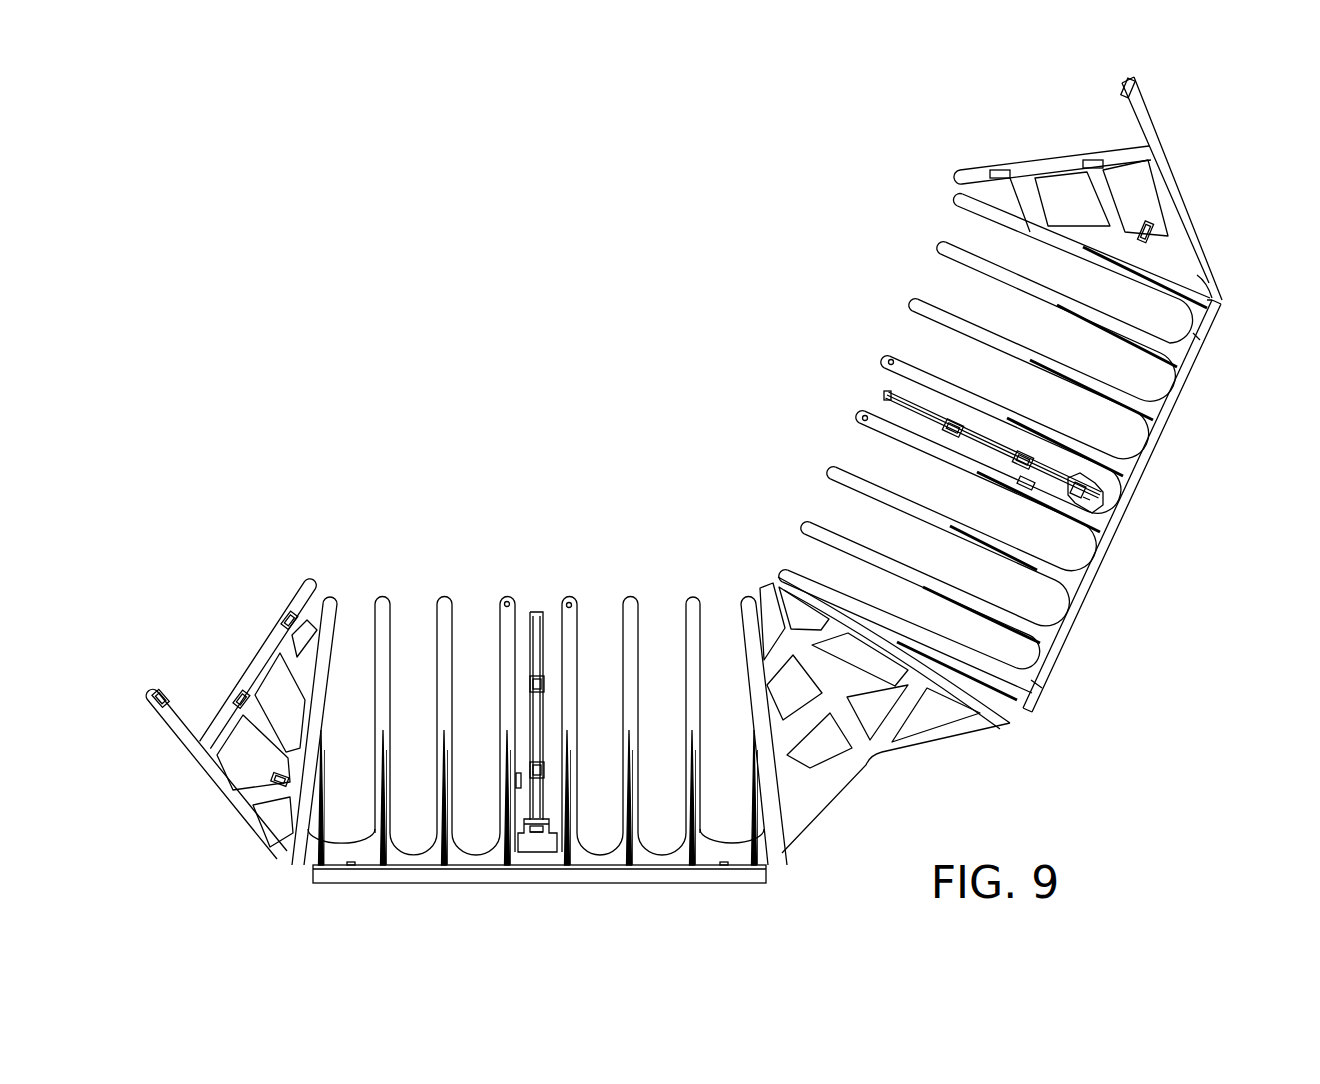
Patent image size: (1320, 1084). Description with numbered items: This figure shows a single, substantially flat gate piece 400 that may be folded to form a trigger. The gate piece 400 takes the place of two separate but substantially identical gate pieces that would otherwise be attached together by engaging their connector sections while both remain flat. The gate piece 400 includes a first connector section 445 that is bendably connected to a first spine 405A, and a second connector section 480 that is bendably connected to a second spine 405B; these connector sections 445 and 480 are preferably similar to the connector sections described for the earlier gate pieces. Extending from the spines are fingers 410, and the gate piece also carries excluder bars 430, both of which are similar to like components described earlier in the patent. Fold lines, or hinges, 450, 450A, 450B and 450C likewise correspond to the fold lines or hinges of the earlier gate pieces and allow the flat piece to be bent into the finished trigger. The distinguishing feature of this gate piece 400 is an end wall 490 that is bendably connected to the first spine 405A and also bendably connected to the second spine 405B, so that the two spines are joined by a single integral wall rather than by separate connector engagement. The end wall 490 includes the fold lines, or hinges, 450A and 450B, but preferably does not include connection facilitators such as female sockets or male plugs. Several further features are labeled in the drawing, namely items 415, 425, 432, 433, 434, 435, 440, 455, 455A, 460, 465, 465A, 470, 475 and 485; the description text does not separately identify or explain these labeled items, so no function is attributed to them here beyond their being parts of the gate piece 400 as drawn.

The gate piece 400 is at (566, 270).
The first spine 405A is at (398, 882).
The second spine 405B is at (1058, 637).
The fingers 410 is at (337, 598).
The pins 415 is at (507, 867).
The tabs 425 is at (350, 869).
The excluder bars 430 is at (537, 610).
The latch 432 is at (545, 829).
The latch opening 433 is at (532, 836).
The latch housing 434 is at (549, 822).
The clips 435 is at (530, 683).
The retainer 440 is at (516, 780).
The first connector section 445 is at (250, 640).
The fold line or hinge 450 is at (303, 830).
The fold line or hinge 450A is at (762, 677).
The fold line or hinge 450B is at (1000, 723).
The fold line or hinge 450C is at (1208, 278).
The lower arm 455 is at (246, 809).
The top bar 455A is at (1175, 204).
The upper arm 460 is at (258, 665).
The cross strut 465 is at (268, 733).
The side arm 465A is at (1117, 203).
The strut opening 470 is at (298, 653).
The fastener clips 475 is at (286, 616).
The second connector section 480 is at (1072, 145).
The clip 485 is at (1153, 233).
The end wall 490 is at (930, 790).